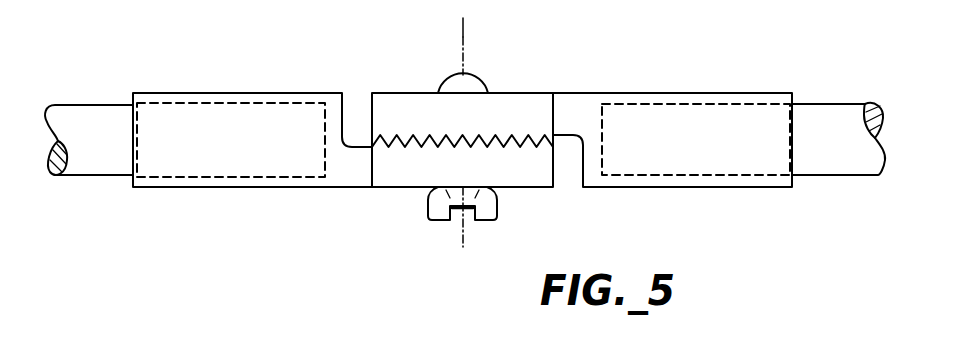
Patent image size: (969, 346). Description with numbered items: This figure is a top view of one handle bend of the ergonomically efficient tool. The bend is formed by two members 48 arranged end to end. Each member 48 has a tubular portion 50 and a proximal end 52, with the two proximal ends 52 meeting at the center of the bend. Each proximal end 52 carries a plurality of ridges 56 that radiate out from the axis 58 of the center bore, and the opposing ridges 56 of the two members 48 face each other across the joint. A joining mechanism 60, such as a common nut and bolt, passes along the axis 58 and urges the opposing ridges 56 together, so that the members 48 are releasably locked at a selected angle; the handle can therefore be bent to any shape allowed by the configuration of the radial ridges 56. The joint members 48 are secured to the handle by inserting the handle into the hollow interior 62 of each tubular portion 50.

The member 48 is at (312, 188).
The tubular portion 50 is at (218, 92).
The proximal end 52 is at (538, 92).
The ridges 56 is at (417, 137).
The axis 58 is at (460, 33).
The joining mechanism 60 is at (428, 202).
The hollow interior 62 is at (795, 96).